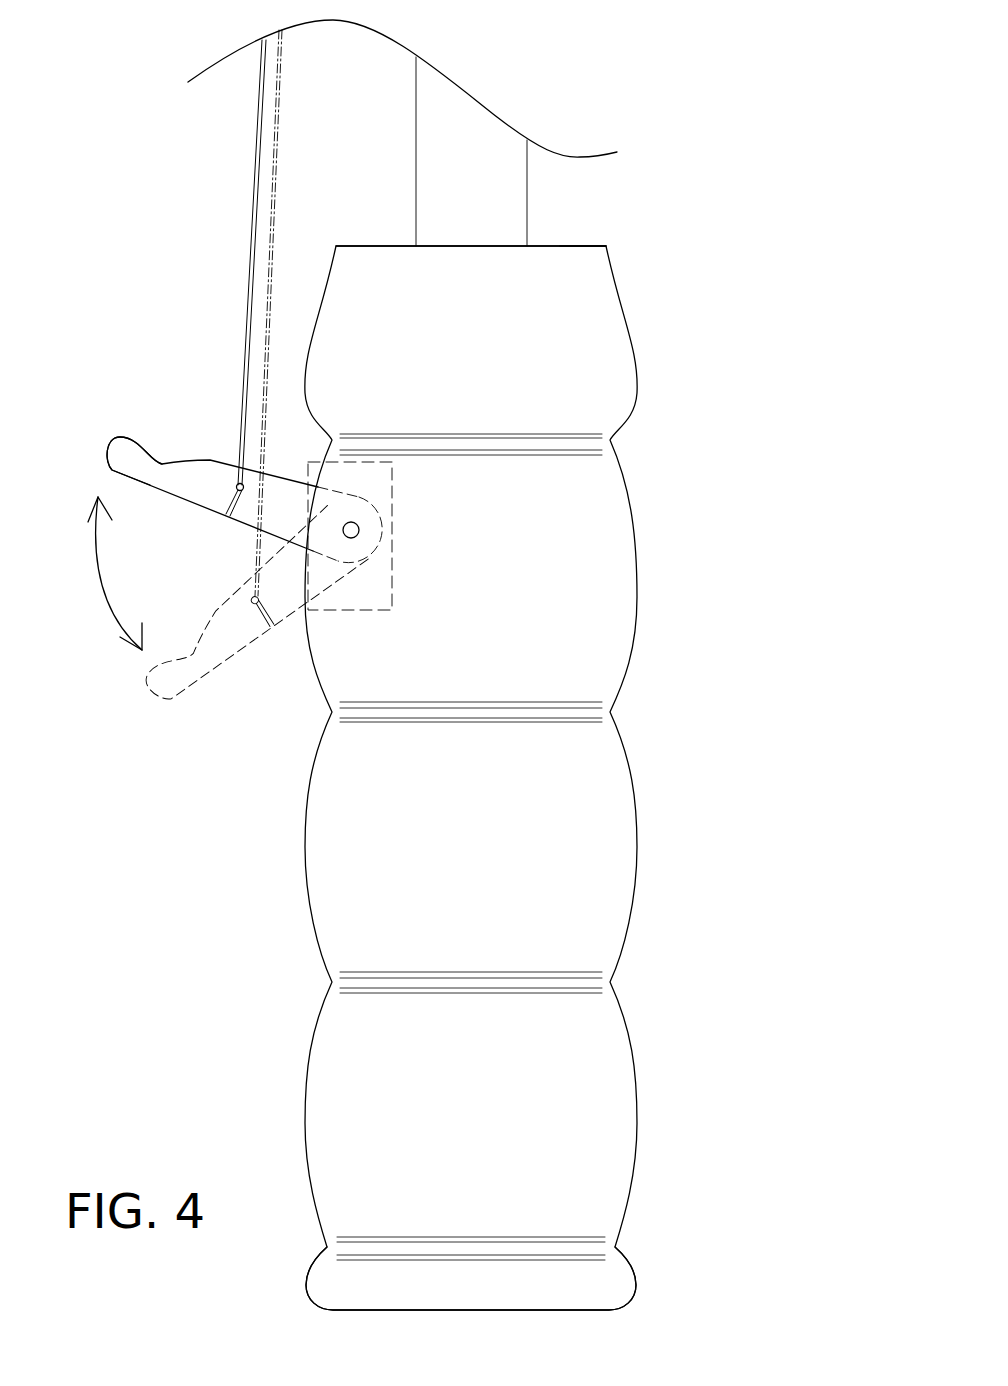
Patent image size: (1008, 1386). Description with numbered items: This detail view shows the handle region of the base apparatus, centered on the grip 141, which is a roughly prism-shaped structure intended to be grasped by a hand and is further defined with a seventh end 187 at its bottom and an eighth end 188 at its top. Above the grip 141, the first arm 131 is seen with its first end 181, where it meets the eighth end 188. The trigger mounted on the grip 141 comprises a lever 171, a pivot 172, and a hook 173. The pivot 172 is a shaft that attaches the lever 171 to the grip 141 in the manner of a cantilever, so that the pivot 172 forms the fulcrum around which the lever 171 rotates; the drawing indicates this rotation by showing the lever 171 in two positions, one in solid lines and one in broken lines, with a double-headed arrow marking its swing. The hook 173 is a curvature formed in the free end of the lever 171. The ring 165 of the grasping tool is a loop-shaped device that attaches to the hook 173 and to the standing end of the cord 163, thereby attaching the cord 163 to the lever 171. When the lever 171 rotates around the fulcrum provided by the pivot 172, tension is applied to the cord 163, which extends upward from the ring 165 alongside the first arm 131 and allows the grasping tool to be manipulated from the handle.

The first arm 131 is at (473, 138).
The grip 141 is at (607, 603).
The cord 163 is at (252, 243).
The ring 165 is at (239, 468).
The lever 171 is at (270, 513).
The pivot 172 is at (359, 530).
The hook 173 is at (162, 463).
The first end 181 is at (485, 247).
The seventh end 187 is at (543, 1310).
The eighth end 188 is at (585, 247).